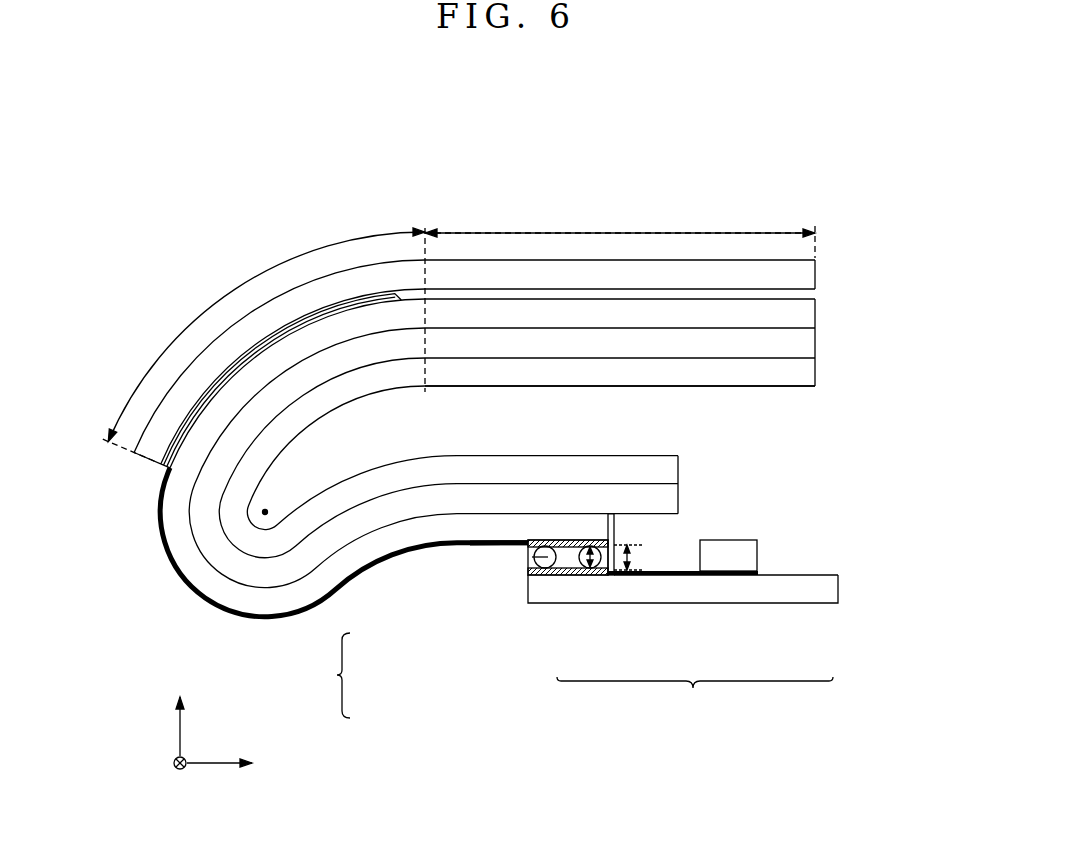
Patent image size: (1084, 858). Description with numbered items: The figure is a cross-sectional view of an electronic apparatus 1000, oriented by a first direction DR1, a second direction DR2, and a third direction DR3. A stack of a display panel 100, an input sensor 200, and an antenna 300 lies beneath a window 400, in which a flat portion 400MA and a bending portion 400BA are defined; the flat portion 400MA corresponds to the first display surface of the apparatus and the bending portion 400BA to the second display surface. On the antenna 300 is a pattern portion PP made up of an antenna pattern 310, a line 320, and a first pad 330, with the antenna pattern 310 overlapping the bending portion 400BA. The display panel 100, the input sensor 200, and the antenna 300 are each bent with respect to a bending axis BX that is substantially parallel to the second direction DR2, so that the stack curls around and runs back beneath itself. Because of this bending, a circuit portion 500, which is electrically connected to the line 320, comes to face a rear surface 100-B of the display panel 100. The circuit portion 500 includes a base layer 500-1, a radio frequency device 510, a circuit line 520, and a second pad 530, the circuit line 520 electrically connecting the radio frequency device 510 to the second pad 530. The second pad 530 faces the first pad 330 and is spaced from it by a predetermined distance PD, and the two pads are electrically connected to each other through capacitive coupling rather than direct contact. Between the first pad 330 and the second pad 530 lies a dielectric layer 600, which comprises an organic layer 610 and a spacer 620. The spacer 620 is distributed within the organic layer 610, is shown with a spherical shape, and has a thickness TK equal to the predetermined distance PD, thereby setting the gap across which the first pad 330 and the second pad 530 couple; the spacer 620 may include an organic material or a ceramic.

The electronic apparatus 1000 is at (797, 178).
The display panel 100 is at (806, 378).
The rear surface of the display panel 100-B is at (763, 388).
The input sensor 200 is at (806, 350).
The antenna 300 is at (806, 321).
The window 400 is at (808, 276).
The flat portion 400MA is at (620, 220).
The bending portion 400BA is at (264, 345).
The antenna pattern 310 is at (160, 466).
The line 320 is at (160, 515).
The first pad 330 is at (541, 540).
The pattern portion PP is at (349, 675).
The bending axis BX is at (278, 501).
The dielectric layer 600 is at (418, 563).
The organic layer 610 is at (527, 544).
The spacer 620 is at (527, 556).
The circuit portion 500 is at (695, 695).
The base layer 500-1 is at (795, 597).
The radio frequency device 510 is at (728, 565).
The circuit line 520 is at (647, 578).
The second pad 530 is at (575, 578).
The thickness TK is at (585, 548).
The predetermined distance PD is at (634, 553).
The first direction DR1 is at (242, 764).
The second direction DR2 is at (182, 778).
The third direction DR3 is at (182, 714).